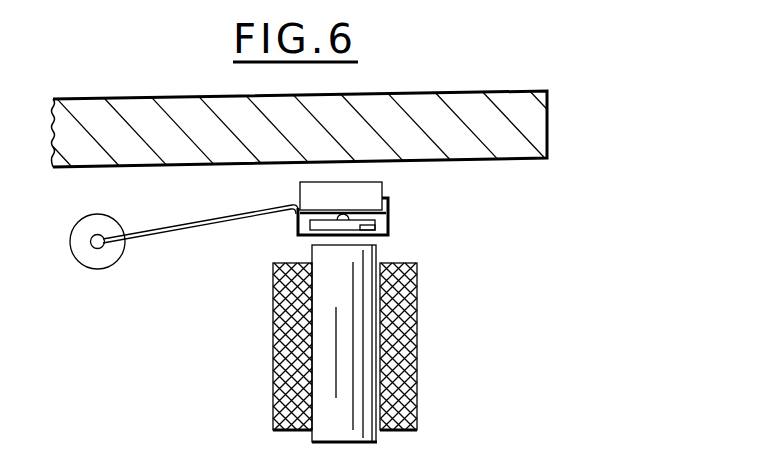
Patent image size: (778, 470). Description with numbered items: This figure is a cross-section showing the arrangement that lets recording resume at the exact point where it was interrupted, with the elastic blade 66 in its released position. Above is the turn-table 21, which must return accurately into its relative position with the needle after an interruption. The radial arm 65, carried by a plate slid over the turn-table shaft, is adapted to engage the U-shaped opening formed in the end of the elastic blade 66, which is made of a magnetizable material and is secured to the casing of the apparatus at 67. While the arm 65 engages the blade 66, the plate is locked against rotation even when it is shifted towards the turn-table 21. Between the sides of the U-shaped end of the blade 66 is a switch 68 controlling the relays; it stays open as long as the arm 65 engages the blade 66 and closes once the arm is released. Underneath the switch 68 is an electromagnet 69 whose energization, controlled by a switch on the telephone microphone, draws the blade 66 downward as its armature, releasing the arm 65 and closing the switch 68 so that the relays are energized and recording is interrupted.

The turn-table 21 is at (468, 107).
The radial arm 65 is at (375, 212).
The elastic blade 66 is at (210, 220).
The securing point on casing 67 is at (100, 248).
The switch 68 is at (363, 227).
The electromagnet 69 is at (398, 353).